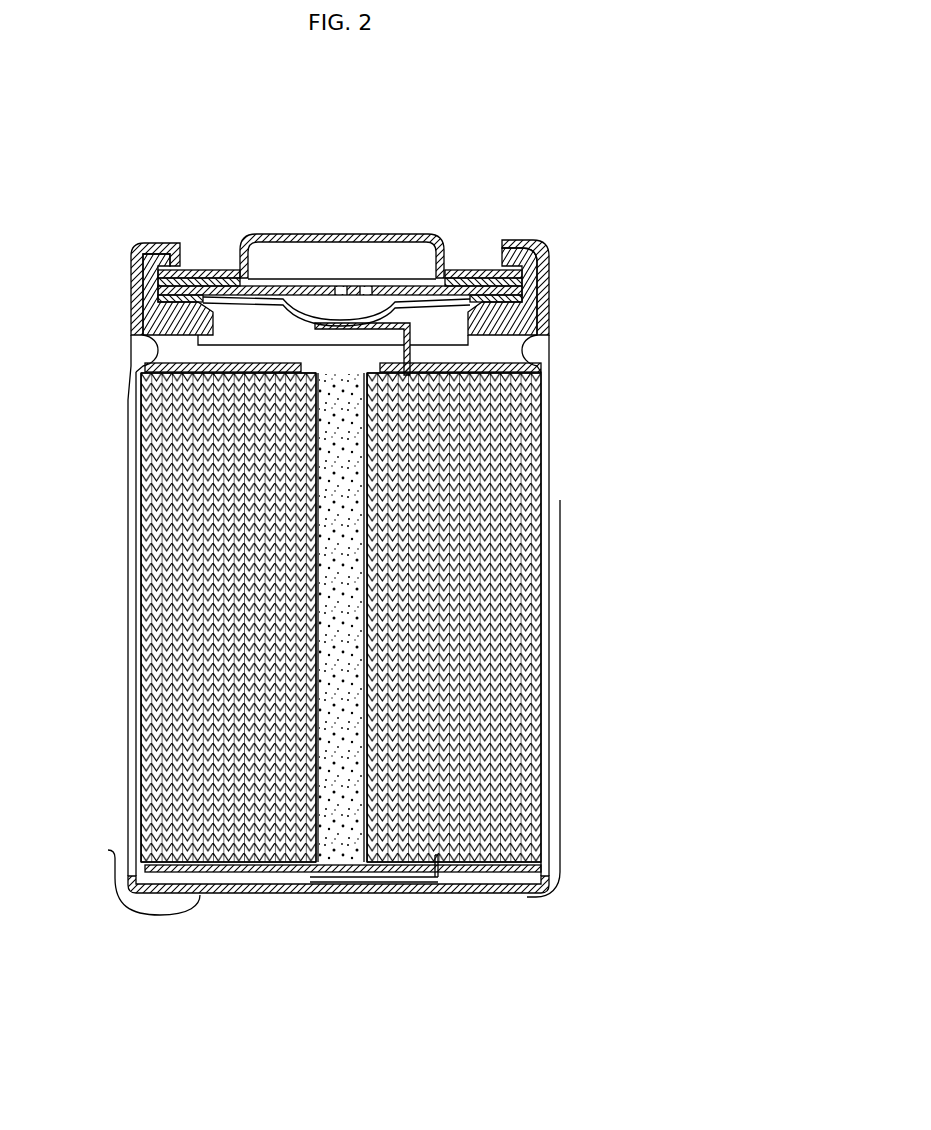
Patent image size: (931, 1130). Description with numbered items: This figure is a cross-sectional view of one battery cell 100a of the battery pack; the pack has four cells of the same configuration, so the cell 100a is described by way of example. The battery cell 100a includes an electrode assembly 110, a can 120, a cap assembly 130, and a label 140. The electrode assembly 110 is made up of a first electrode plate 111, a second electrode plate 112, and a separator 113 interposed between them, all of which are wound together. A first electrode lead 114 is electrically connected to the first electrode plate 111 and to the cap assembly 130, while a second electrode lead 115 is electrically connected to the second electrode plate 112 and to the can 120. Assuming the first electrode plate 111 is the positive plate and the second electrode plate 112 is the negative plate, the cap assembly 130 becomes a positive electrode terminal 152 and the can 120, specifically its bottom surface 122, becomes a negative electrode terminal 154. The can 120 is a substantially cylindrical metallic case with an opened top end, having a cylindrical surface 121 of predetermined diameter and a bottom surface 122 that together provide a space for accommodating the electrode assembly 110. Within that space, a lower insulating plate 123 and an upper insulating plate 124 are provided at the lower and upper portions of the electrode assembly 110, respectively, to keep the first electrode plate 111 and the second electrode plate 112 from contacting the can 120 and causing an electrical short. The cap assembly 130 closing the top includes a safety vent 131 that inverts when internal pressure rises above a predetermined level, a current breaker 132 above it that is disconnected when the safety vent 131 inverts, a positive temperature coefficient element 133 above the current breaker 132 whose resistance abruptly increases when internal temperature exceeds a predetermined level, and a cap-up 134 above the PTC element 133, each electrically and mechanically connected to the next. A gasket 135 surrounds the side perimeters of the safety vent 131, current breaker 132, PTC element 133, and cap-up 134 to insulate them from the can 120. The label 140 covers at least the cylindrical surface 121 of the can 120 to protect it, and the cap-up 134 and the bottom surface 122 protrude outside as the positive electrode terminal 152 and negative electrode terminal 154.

The battery cell 100a is at (141, 188).
The electrode assembly 110 is at (613, 383).
The first electrode plate 111 is at (513, 417).
The second electrode plate 112 is at (520, 455).
The separator 113 is at (515, 439).
The first electrode lead 114 is at (407, 353).
The second electrode lead 115 is at (560, 500).
The can 120 is at (60, 820).
The cylindrical surface 121 is at (140, 795).
The bottom surface 122 is at (108, 850).
The lower insulating plate 123 is at (243, 872).
The upper insulating plate 124 is at (144, 376).
The cap assembly 130 is at (545, 140).
The safety vent 131 is at (441, 268).
The current breaker 132 is at (379, 288).
The positive temperature coefficient (PTC) element 133 is at (457, 268).
The cap-up 134 is at (371, 236).
The gasket 135 is at (502, 259).
The label 140 is at (127, 674).
The positive electrode terminal 152 is at (300, 212).
The negative electrode terminal 154 is at (335, 910).